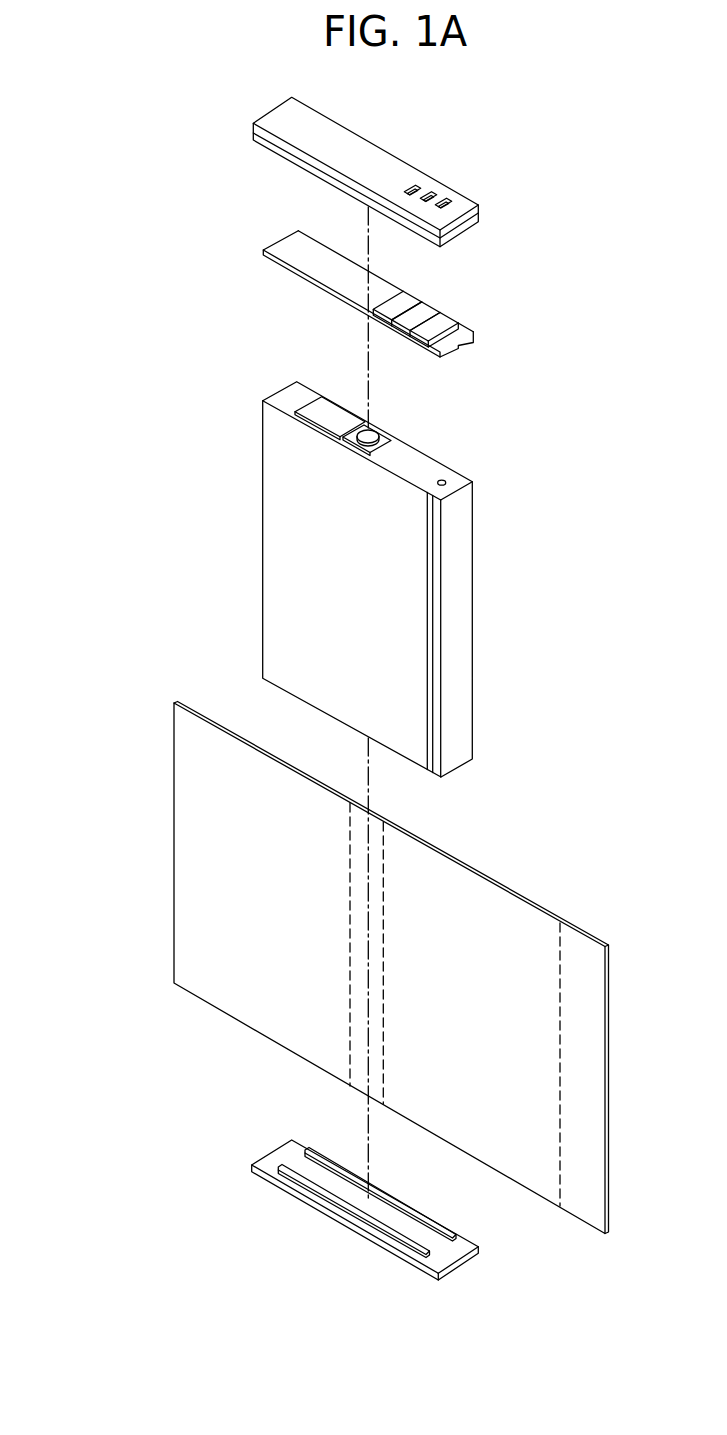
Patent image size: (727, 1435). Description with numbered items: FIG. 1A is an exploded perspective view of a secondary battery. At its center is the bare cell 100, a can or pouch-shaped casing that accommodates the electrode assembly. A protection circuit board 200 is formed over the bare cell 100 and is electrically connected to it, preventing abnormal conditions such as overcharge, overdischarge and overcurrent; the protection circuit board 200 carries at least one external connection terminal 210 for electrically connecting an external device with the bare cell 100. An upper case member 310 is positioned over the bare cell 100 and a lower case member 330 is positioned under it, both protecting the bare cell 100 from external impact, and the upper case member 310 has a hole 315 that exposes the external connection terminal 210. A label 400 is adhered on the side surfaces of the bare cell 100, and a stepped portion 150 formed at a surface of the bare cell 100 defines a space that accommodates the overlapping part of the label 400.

The upper case member 310 is at (277, 118).
The hole 315 is at (407, 190).
The protection circuit board 200 is at (292, 247).
The external connection terminal 210 is at (443, 318).
The bare cell 100 is at (285, 490).
The stepped portion 150 is at (435, 615).
The label 400 is at (190, 863).
The lower case member 330 is at (287, 1153).